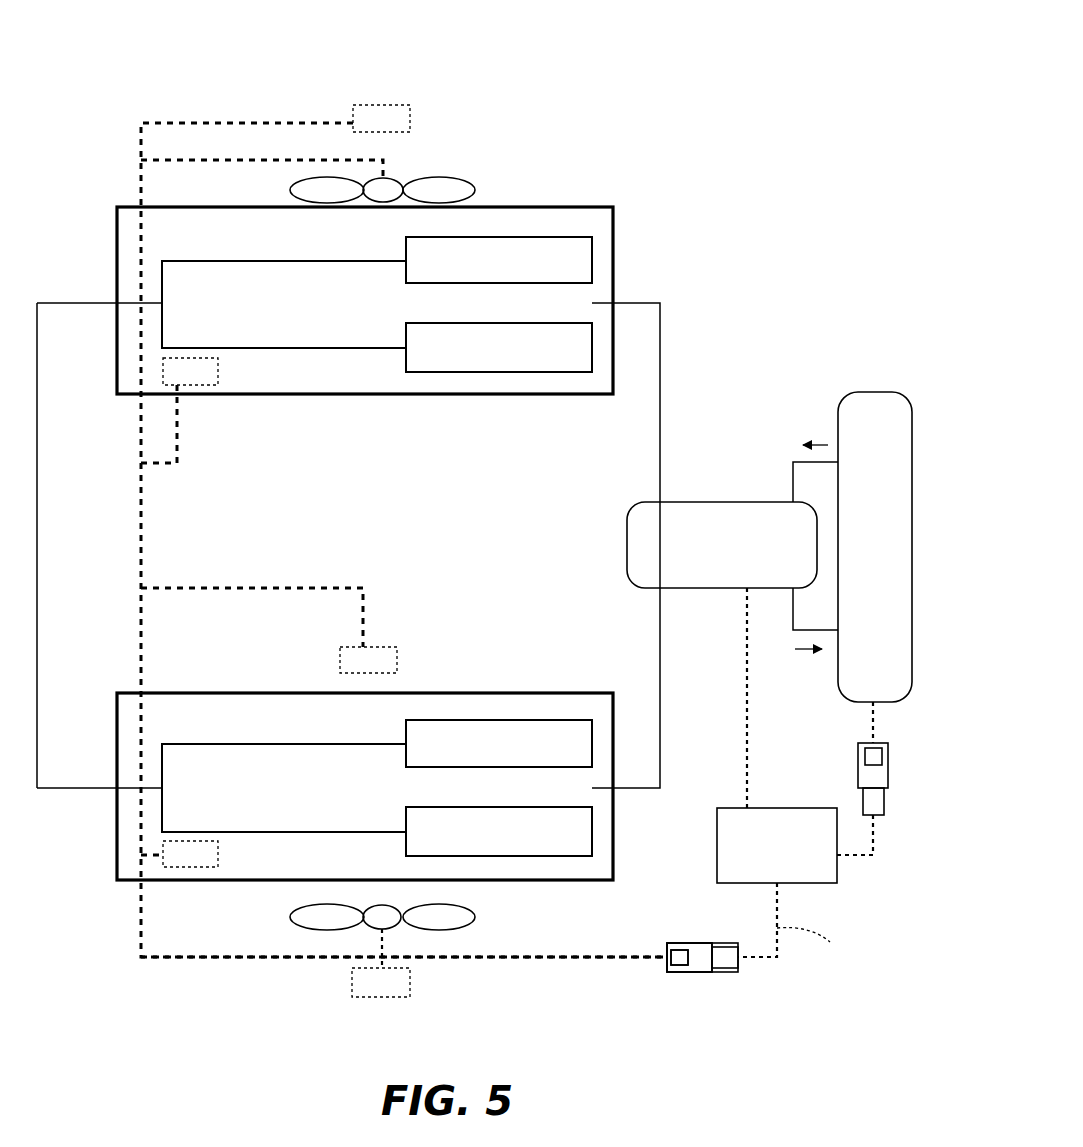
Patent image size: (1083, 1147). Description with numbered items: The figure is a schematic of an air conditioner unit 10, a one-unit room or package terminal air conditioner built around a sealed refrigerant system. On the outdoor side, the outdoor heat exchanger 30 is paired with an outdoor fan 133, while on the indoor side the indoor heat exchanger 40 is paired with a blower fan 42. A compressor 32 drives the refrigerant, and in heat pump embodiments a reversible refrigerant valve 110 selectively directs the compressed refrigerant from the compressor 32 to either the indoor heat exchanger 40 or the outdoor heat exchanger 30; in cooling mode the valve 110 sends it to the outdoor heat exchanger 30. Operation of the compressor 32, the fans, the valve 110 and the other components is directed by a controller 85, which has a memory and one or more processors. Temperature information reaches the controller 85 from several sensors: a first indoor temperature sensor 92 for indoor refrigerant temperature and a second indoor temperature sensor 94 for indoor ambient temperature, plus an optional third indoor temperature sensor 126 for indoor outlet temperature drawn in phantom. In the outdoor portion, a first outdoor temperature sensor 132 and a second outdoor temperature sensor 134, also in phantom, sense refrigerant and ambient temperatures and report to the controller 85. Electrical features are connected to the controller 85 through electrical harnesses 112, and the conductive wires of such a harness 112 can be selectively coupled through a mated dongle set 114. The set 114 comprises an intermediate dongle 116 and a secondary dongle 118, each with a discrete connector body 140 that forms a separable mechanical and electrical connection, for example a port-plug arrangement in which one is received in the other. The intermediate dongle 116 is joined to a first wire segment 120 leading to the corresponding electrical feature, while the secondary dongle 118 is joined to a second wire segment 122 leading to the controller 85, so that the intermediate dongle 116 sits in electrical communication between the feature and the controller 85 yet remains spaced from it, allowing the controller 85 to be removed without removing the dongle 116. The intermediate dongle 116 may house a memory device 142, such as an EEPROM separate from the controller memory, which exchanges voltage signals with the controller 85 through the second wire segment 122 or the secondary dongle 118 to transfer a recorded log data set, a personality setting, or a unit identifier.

The air conditioner unit 10 is at (690, 66).
The outdoor heat exchanger 30 is at (380, 394).
The compressor 32 is at (856, 392).
The indoor heat exchanger 40 is at (207, 693).
The blower fan 42 is at (458, 926).
The controller 85 is at (777, 772).
The first indoor temperature sensor 92 is at (176, 867).
The second indoor temperature sensor 94 is at (383, 647).
The reversible refrigerant valve 110 is at (681, 502).
The electrical harness 112 is at (858, 887).
The mated dongle set 114 is at (840, 781).
The intermediate dongle 116 is at (695, 975).
The secondary dongle 118 is at (722, 970).
The first wire segment 120 is at (585, 962).
The second wire segment 122 is at (816, 946).
The third indoor temperature sensor 126 is at (415, 988).
The first outdoor temperature sensor 132 is at (192, 392).
The outdoor fan 133 is at (455, 178).
The second outdoor temperature sensor 134 is at (410, 120).
The connector body 140 is at (716, 1019).
The memory device 142 is at (680, 966).